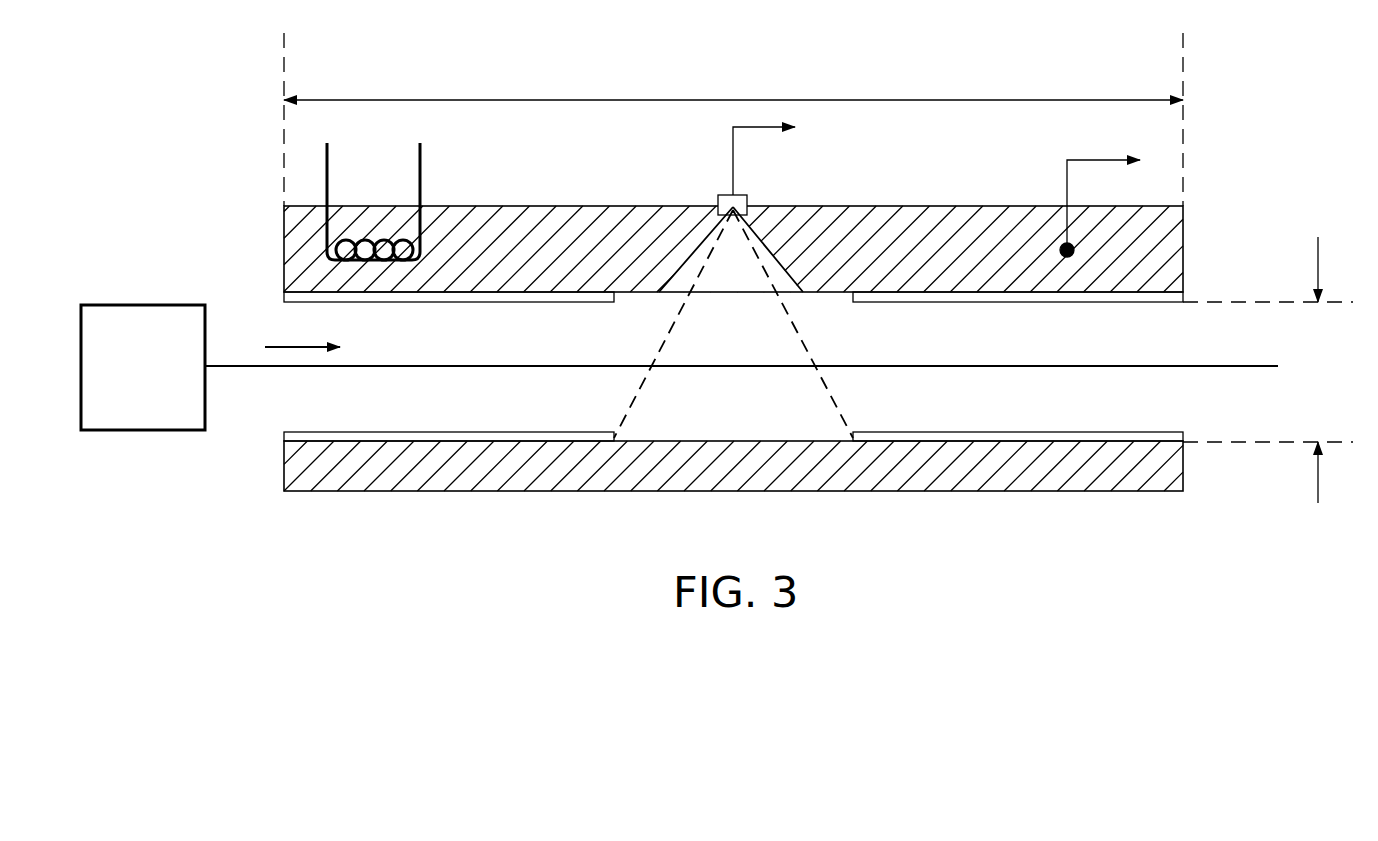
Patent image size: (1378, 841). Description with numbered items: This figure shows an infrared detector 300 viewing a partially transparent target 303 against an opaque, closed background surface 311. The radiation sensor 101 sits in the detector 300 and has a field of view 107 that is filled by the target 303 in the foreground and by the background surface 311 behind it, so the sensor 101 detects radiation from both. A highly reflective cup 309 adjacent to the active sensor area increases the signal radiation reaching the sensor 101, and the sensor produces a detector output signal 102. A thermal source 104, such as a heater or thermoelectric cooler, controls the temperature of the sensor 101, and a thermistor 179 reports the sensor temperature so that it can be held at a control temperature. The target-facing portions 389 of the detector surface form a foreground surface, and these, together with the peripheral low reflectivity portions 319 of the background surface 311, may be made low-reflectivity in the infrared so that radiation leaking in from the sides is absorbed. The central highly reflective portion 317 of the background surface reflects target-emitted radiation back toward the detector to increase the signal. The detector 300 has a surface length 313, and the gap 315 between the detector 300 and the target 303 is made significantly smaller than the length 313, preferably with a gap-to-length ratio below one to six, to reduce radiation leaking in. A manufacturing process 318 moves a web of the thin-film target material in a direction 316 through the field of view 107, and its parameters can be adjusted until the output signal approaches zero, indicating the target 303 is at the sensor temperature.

The detector 300 is at (568, 246).
The target-facing portions 389 is at (450, 302).
The thermal source 104 is at (422, 173).
The radiation sensor 101 is at (743, 195).
The detector output signal 102 is at (733, 160).
The highly reflective cup 309 is at (780, 272).
The field of view 107 is at (792, 320).
The thermistor 179 is at (1075, 245).
The surface length 313 is at (734, 98).
The gap 315 is at (1318, 253).
The background surface 311 is at (1187, 442).
The process 318 is at (121, 391).
The partially transparent target 303 is at (1035, 366).
The direction 316 is at (300, 345).
The highly reflective portion 317 is at (733, 439).
The low reflectivity portions 319 is at (450, 433).